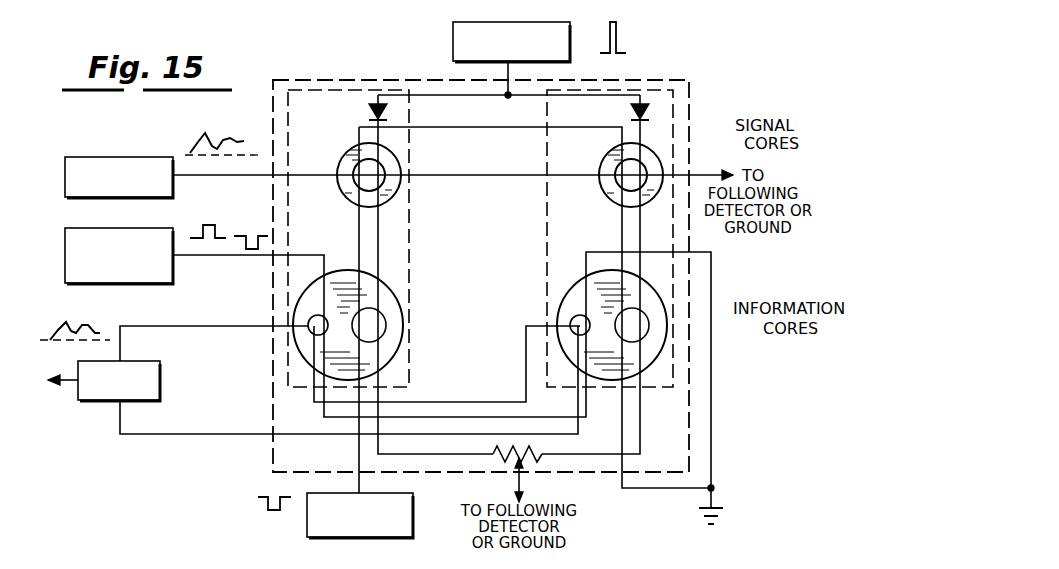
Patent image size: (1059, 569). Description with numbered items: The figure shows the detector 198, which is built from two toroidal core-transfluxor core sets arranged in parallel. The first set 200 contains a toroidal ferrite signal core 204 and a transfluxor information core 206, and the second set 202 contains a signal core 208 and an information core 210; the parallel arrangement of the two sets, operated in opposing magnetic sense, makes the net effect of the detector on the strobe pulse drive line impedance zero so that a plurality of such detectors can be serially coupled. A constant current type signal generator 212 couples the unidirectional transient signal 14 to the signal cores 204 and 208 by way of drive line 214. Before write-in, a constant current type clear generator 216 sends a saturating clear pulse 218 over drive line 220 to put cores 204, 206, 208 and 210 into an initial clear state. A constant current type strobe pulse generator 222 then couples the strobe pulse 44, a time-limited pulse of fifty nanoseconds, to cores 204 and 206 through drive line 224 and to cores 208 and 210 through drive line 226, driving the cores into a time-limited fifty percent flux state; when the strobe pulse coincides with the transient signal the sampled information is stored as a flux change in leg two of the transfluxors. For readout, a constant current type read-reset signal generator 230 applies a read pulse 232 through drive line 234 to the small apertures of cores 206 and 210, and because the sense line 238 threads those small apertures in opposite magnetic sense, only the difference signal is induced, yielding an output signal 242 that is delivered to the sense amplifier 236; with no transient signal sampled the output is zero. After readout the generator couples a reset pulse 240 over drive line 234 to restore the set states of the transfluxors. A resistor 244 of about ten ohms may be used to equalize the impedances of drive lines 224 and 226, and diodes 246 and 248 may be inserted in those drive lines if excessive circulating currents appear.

The transient signal 14 is at (203, 136).
The strobe pulse 44 is at (618, 35).
The detector 198 is at (679, 80).
The set 200 is at (412, 232).
The set 202 is at (546, 268).
The signal core 204 is at (350, 153).
The information core 206 is at (400, 303).
The signal core 208 is at (608, 155).
The information core 210 is at (556, 299).
The signal generator 212 is at (100, 157).
The drive line 214 is at (210, 177).
The clear generator 216 is at (312, 537).
The clear pulse 218 is at (258, 510).
The drive line 220 is at (357, 450).
The strobe pulse generator 222 is at (452, 44).
The drive line 224 is at (440, 94).
The drive line 226 is at (537, 96).
The read-reset signal generator 230 is at (96, 228).
The read pulse 232 is at (201, 226).
The drive line 234 is at (212, 257).
The sense amplifier 236 is at (160, 380).
The sense line 238 is at (166, 434).
The reset pulse 240 is at (262, 234).
The output signal 242 is at (82, 322).
The resistor 244 is at (530, 448).
The diode 246 is at (367, 111).
The diode 248 is at (629, 111).